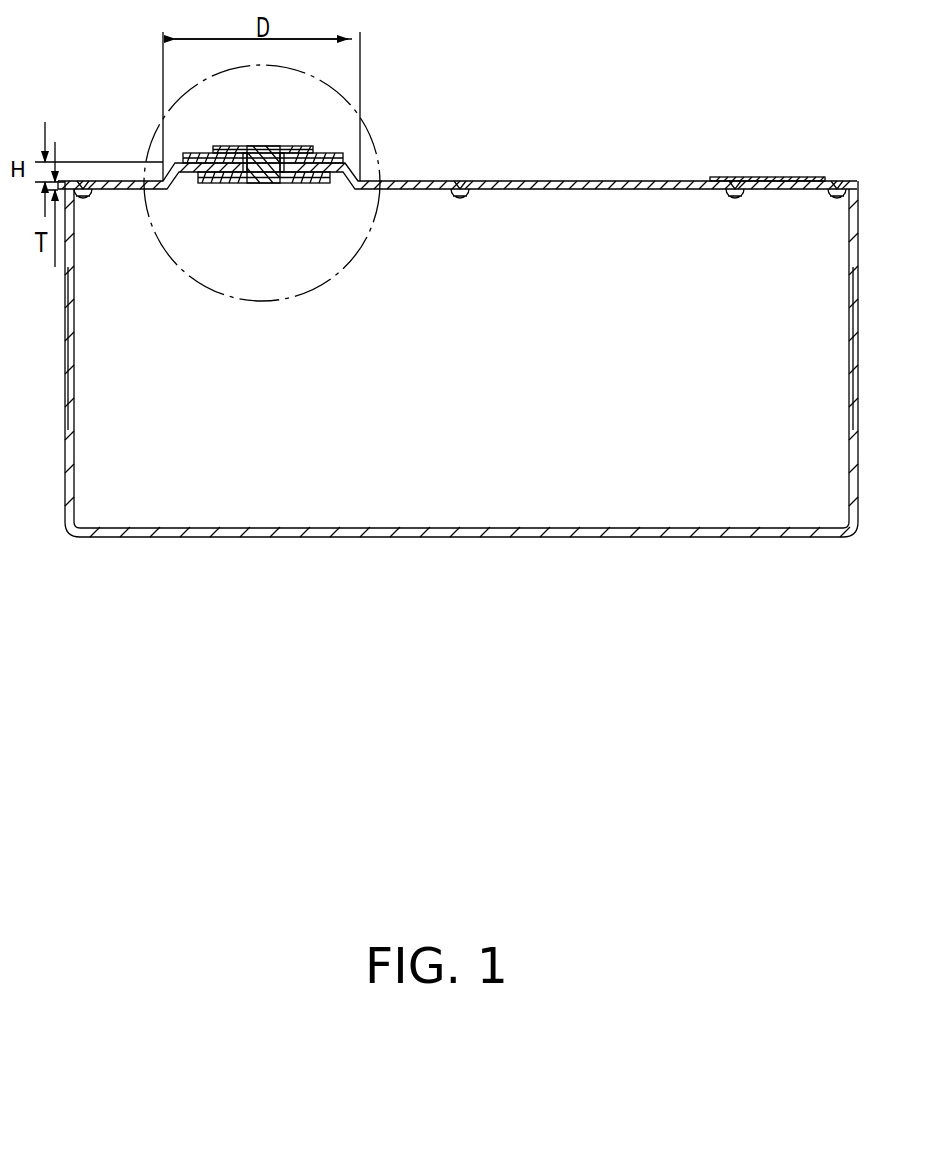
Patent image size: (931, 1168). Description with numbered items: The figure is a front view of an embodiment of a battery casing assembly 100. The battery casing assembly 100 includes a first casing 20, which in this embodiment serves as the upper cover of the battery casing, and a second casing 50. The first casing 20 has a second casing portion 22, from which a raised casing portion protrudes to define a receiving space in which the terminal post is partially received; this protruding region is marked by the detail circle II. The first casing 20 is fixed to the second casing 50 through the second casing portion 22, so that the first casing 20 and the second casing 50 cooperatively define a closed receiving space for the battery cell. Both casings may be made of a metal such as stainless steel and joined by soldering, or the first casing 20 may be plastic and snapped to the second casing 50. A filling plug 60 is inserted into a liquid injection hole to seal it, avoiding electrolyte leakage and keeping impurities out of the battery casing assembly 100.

The battery casing assembly 100 is at (445, 329).
The first casing 20 is at (457, 158).
The second casing portion 22 is at (551, 186).
The second casing 50 is at (420, 532).
The filling plug 60 is at (762, 177).
The detail region II is at (381, 142).